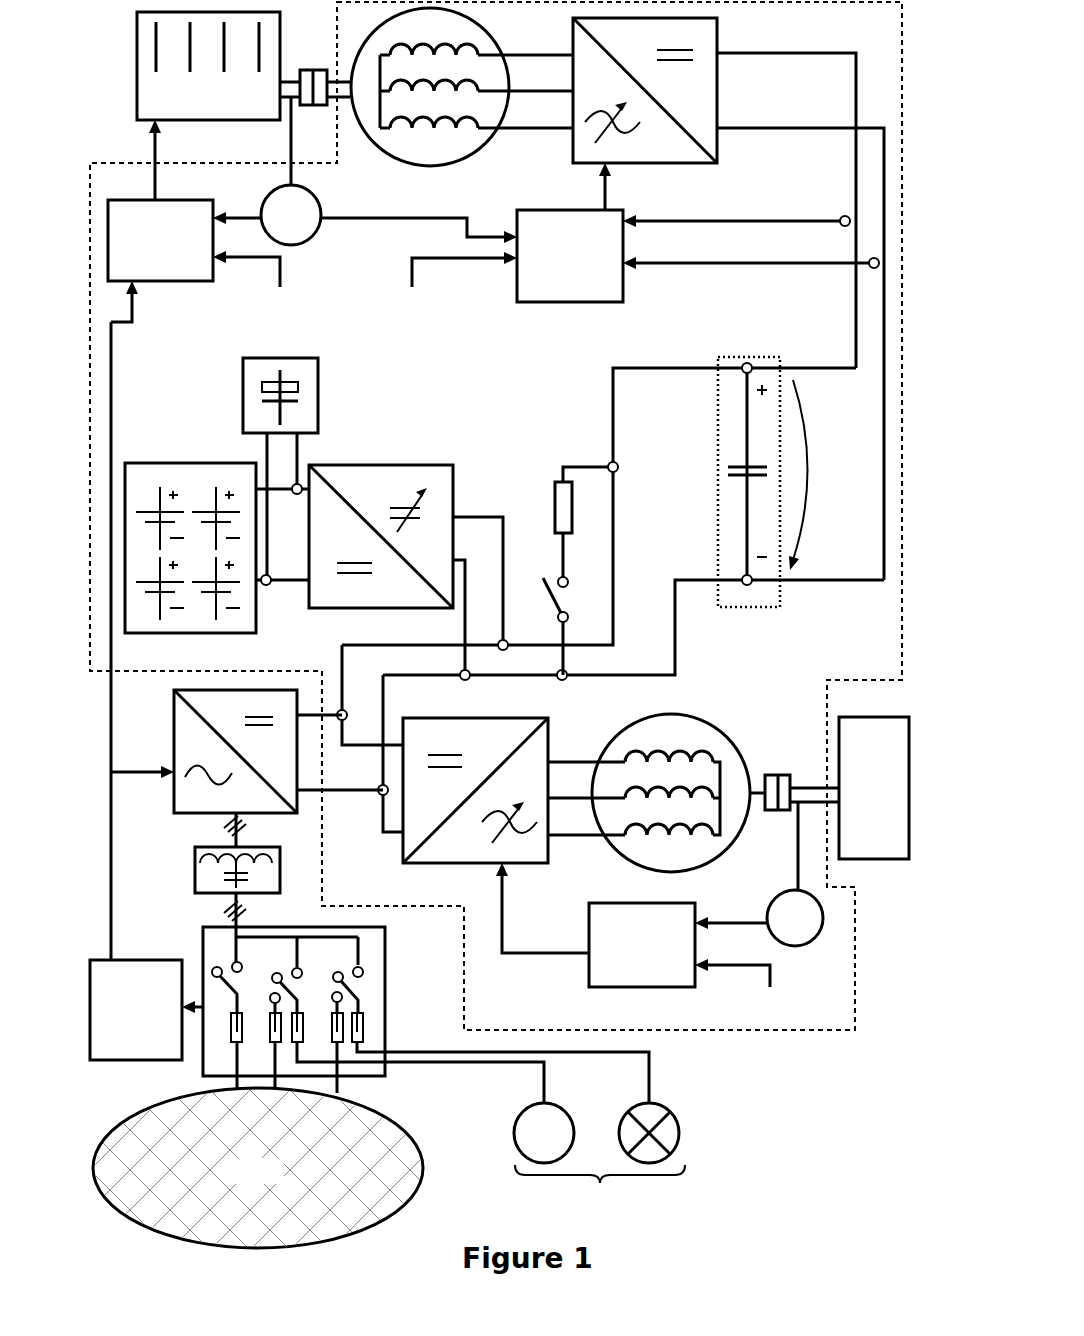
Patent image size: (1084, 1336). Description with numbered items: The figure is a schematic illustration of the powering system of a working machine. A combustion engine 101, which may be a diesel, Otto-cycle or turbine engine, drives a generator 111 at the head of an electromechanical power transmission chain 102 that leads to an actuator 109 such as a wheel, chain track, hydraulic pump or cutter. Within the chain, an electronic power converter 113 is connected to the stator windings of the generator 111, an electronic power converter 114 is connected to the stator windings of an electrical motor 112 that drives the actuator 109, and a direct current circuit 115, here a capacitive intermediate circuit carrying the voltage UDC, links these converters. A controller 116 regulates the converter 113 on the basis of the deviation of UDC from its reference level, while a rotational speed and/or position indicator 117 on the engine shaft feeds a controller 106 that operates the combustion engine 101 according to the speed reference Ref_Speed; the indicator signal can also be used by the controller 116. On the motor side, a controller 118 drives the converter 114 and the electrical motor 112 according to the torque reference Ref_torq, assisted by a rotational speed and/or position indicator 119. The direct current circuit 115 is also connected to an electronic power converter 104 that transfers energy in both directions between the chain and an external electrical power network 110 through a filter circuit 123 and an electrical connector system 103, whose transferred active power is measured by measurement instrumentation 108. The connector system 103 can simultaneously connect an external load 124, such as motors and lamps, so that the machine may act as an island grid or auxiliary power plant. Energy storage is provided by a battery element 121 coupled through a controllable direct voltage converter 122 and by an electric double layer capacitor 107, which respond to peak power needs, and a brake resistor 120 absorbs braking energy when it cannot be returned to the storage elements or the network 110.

The combustion engine 101 is at (243, 66).
The electromechanical power transmission chain 102 is at (717, 1068).
The electrical connector system 103 is at (202, 945).
The electronic power converter 104 is at (173, 760).
The controller 106 is at (232, 540).
The electric double layer capacitor 107 is at (318, 400).
The measurement instrumentation 108 is at (146, 1010).
The actuator 109 is at (874, 788).
The external electrical power network 110 is at (320, 1048).
The generator 111 is at (417, 165).
The electrical motor 112 is at (697, 713).
The electronic power converter 113 is at (648, 163).
The electronic power converter 114 is at (452, 718).
The direct current circuit 115 is at (747, 357).
The controller 116 is at (629, 244).
The rotational speed and/or position indicator 117 is at (365, 171).
The controller 118 is at (671, 942).
The rotational speed and/or position indicator 119 is at (759, 874).
The brake resistor 120 is at (555, 515).
The battery element 121 is at (152, 463).
The controllable direct voltage converter 122 is at (338, 465).
The filter circuit 123 is at (195, 875).
The external load 124 is at (599, 1156).